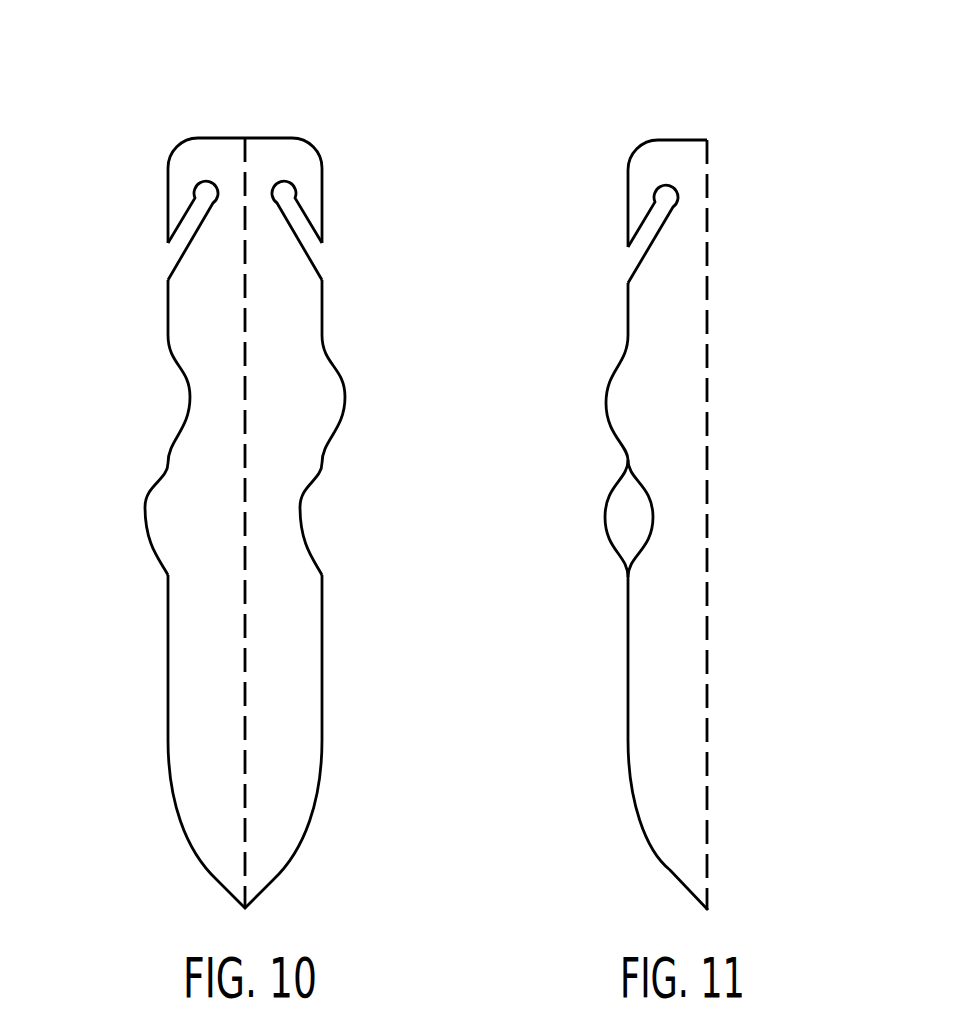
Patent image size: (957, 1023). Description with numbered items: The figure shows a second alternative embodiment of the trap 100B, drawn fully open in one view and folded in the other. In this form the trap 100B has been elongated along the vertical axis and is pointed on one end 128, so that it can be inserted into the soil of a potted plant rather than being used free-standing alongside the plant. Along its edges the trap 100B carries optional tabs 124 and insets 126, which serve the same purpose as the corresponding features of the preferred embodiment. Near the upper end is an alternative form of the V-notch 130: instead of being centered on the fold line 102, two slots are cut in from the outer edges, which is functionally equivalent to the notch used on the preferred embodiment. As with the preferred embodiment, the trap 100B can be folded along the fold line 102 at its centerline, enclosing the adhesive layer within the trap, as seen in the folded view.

In FIG. 10, the trap (second alternative embodiment) 100B is at (248, 506).
In FIG. 11, the trap (second alternative embodiment) 100B is at (643, 498).
In FIG. 10, the fold line 102 is at (250, 135).
In FIG. 11, the fold line 102 is at (709, 228).
In FIG. 10, the tabs 124 is at (145, 527).
In FIG. 11, the tabs 124 is at (605, 392).
In FIG. 10, the insets 126 is at (186, 410).
In FIG. 11, the insets 126 is at (650, 527).
In FIG. 10, the pointed end 128 is at (215, 880).
In FIG. 11, the pointed end 128 is at (667, 870).
In FIG. 10, the V-notch (alternative form) 130 is at (178, 263).
In FIG. 11, the V-notch (alternative form) 130 is at (637, 262).